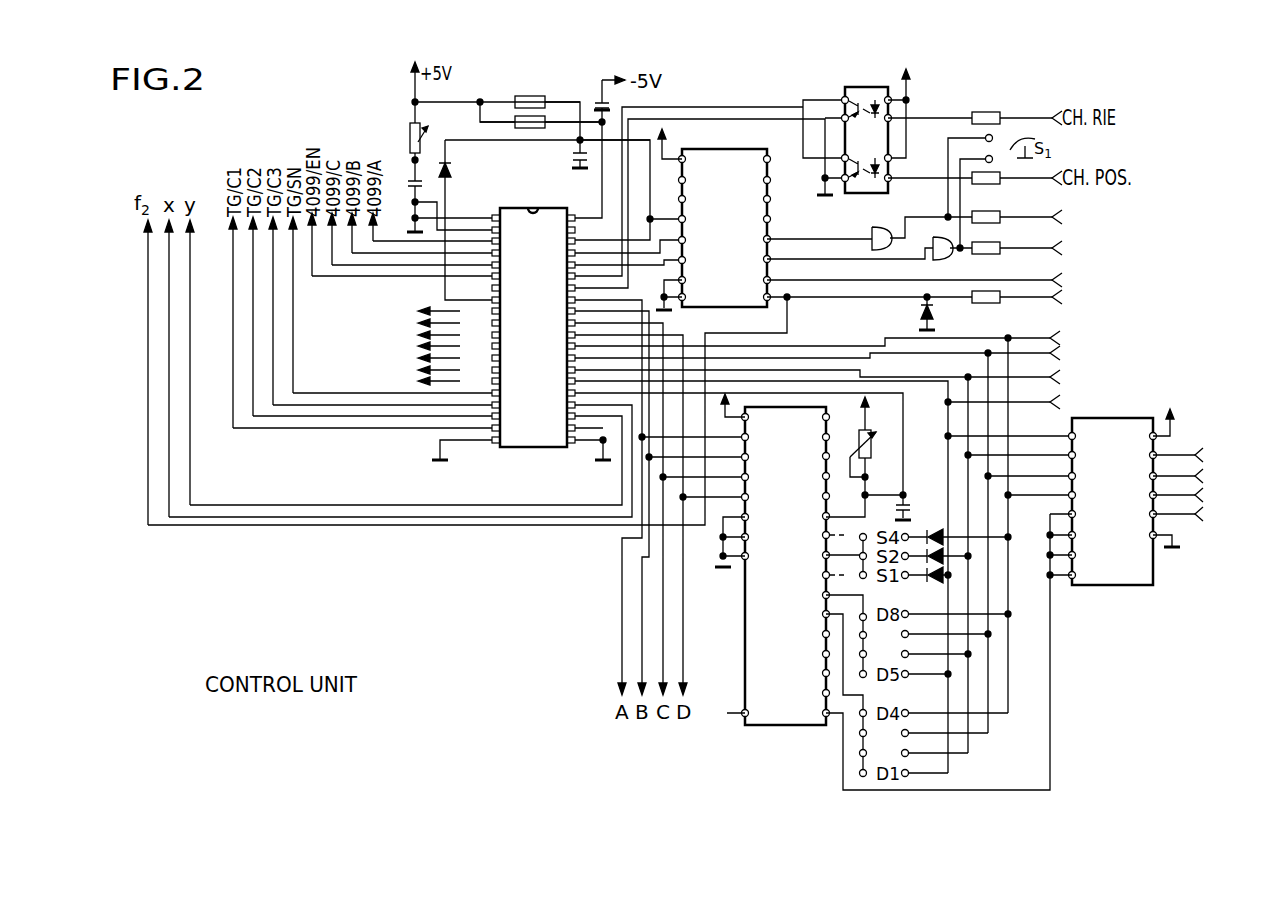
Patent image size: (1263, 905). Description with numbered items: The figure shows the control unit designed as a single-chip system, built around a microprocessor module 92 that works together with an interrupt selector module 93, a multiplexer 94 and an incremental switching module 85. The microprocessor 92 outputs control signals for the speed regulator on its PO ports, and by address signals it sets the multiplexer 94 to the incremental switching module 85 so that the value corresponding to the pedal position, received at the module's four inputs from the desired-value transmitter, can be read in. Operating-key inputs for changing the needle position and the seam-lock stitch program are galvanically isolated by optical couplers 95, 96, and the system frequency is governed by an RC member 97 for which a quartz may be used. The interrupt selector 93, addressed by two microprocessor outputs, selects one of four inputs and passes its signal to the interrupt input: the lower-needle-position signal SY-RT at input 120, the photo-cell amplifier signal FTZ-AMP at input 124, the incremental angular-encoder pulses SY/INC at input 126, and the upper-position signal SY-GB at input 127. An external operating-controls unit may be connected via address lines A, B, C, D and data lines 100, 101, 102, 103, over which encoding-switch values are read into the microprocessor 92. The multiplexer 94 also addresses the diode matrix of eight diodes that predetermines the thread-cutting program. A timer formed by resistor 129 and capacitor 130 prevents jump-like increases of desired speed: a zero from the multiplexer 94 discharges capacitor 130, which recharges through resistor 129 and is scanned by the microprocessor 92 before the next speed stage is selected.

The incremental switching module 85 is at (1143, 577).
The microprocessor module 92 is at (504, 332).
The interrupt selector module 93 is at (732, 312).
The multiplexer 94 is at (745, 640).
The optical coupler 95 is at (848, 98).
The optical coupler 96 is at (865, 191).
The RC member 97 is at (412, 160).
The data line 100 is at (1022, 406).
The data line 101 is at (1022, 381).
The data line 102 is at (1022, 358).
The data line 103 is at (1026, 338).
The input for lower needle position signal 120 is at (1027, 222).
The input for photo-cell amplifier signal 124 is at (957, 274).
The input for angular encoder incremental signals 126 is at (1030, 308).
The input for positioning signal 127 is at (1022, 256).
The resistor 129 is at (869, 457).
The capacitor 130 is at (906, 498).